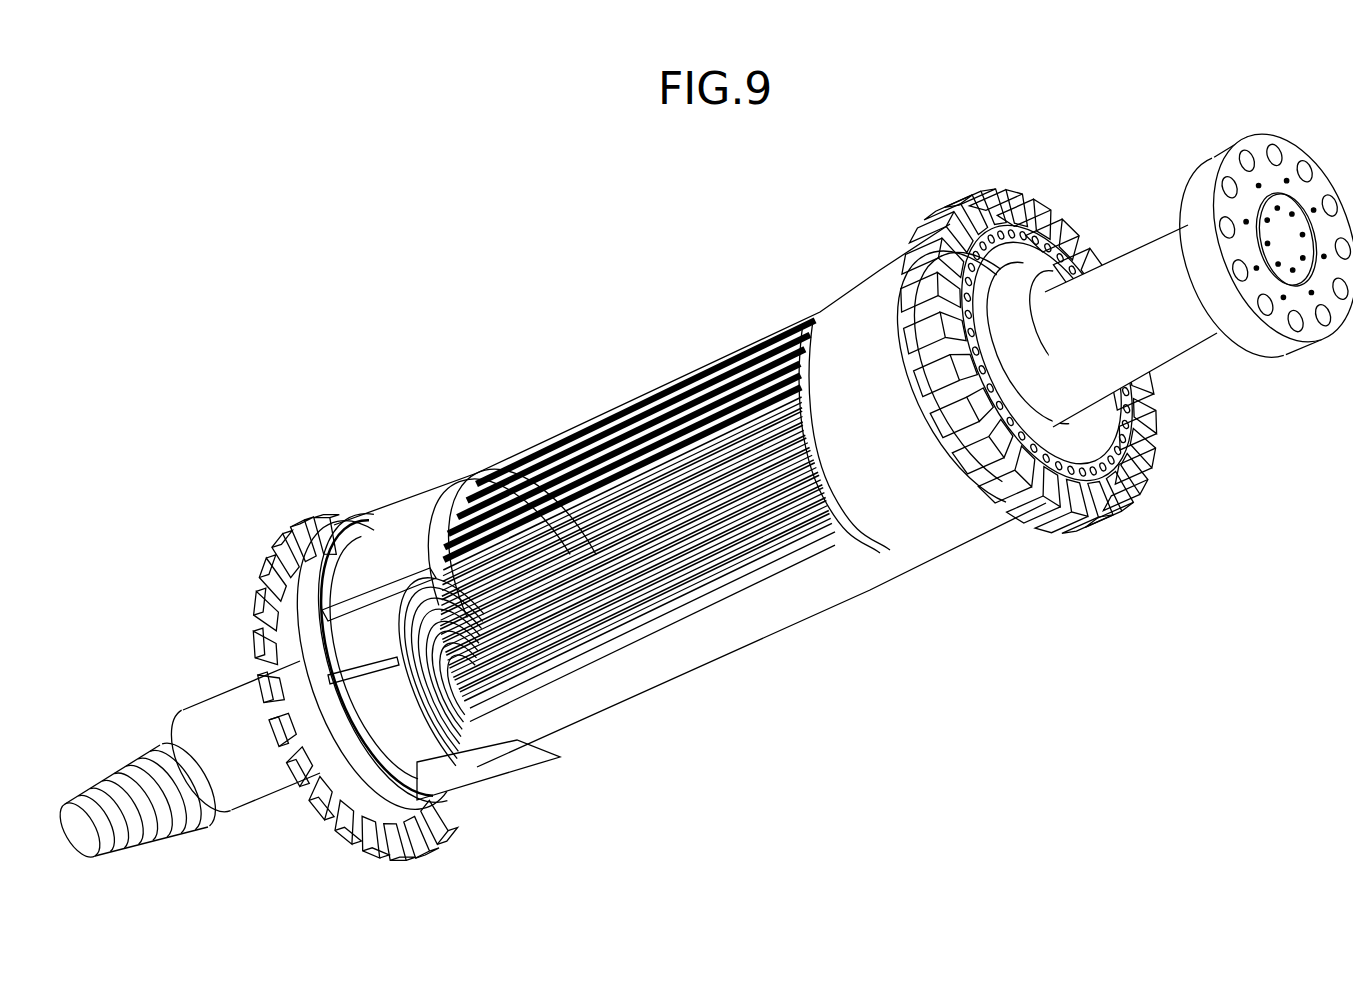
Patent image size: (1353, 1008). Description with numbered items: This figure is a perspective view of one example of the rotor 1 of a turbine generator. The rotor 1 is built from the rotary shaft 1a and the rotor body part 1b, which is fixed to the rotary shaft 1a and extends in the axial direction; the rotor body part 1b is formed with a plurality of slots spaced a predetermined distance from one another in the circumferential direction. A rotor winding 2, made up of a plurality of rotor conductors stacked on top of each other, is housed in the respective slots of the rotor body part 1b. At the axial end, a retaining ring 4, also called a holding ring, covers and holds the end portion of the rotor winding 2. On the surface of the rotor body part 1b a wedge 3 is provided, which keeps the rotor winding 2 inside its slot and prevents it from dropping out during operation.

The rotor 1 is at (722, 636).
The rotary shaft 1a is at (1117, 287).
The rotor body part 1b is at (630, 680).
The rotor winding 2 is at (494, 785).
The wedge 3 is at (790, 546).
The retaining ring 4 is at (396, 552).